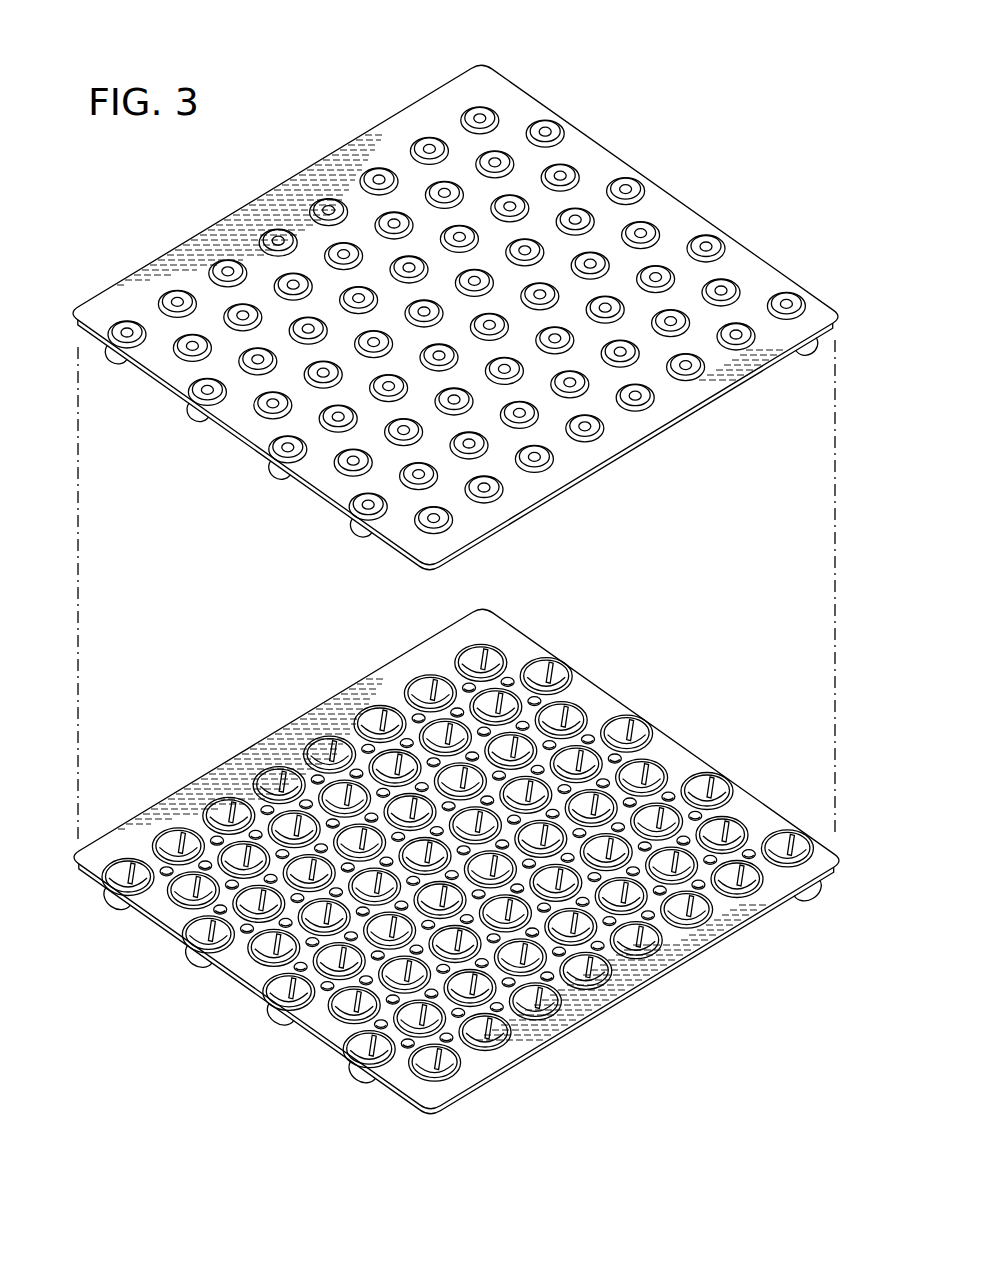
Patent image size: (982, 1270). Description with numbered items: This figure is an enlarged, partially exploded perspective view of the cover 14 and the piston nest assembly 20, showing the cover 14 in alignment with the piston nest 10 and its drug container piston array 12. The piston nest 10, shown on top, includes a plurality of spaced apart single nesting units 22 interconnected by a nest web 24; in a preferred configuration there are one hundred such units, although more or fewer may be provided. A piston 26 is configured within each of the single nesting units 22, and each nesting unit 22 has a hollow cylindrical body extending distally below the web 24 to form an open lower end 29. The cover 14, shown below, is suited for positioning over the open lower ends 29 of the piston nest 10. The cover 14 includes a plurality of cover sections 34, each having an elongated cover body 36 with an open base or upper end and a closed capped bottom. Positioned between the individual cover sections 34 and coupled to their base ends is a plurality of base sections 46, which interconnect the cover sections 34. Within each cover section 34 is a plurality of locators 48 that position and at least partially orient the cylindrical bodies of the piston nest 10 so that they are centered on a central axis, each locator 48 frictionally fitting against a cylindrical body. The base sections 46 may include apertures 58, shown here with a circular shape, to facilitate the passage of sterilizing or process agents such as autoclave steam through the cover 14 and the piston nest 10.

The piston nest 10 is at (515, 70).
The drug container piston array 12 is at (606, 114).
The cover 14 is at (612, 688).
The piston nest assembly 20 is at (62, 281).
The single nesting unit 22 is at (633, 183).
The nest web 24 is at (393, 548).
The piston 26 is at (690, 370).
The open lower end 29 is at (198, 423).
The cover section 34 is at (835, 872).
The elongated cover body 36 is at (111, 906).
The base section 46 is at (647, 800).
The locator 48 is at (228, 820).
The aperture 58 is at (509, 680).